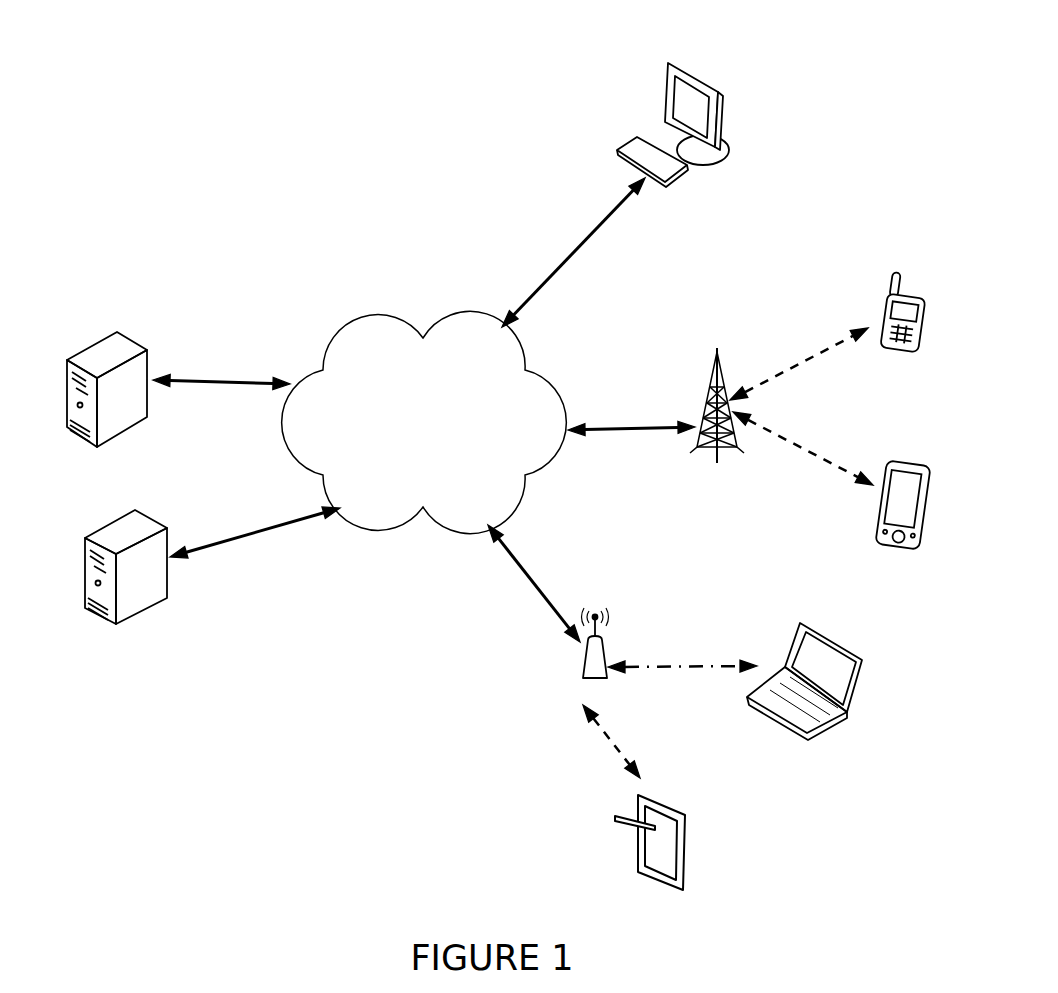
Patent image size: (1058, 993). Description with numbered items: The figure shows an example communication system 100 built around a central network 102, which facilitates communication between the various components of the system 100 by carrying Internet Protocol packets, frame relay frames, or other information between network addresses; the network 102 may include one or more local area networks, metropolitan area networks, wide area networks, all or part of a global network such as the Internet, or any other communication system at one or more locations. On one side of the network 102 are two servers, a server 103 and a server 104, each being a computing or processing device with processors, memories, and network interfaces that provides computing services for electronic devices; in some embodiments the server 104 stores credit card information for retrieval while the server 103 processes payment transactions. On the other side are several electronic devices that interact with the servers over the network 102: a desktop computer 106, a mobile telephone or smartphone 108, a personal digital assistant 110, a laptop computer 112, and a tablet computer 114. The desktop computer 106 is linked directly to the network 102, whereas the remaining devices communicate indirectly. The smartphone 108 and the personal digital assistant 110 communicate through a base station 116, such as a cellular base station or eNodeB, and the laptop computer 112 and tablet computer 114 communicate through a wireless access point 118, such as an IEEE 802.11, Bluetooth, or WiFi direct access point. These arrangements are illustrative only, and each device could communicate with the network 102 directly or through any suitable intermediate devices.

The communication system 100 is at (236, 161).
The network 102 is at (331, 324).
The server 103 is at (83, 350).
The server 104 is at (102, 527).
The desktop computer 106 is at (658, 70).
The mobile telephone or smartphone 108 is at (920, 297).
The personal digital assistant (PDA) 110 is at (920, 477).
The laptop computer 112 is at (862, 670).
The tablet computer 114 is at (688, 835).
The base station 116 is at (745, 448).
The wireless access point 118 is at (607, 652).